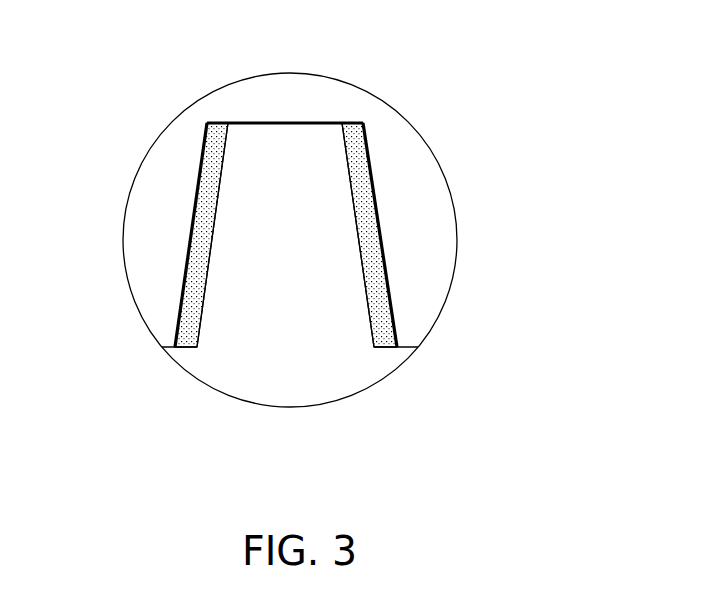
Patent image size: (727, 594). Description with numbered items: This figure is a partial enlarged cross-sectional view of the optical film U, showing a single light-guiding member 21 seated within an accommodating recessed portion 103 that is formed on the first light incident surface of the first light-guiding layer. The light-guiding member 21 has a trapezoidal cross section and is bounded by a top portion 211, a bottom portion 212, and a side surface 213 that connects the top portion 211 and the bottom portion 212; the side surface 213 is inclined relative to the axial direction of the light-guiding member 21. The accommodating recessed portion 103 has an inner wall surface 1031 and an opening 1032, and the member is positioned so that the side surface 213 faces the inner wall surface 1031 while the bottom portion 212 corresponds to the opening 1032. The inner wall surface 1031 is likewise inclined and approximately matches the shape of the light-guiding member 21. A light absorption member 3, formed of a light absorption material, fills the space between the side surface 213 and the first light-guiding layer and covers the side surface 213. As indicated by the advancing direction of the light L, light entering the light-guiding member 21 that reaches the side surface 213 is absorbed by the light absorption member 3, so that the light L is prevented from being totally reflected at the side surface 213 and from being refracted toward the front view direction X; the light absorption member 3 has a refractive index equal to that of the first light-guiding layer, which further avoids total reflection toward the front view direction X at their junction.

The optical film U is at (105, 38).
The light absorption member 3 is at (212, 162).
The light-guiding member 21 is at (304, 250).
The top portion 211 is at (277, 138).
The bottom portion 212 is at (325, 328).
The side surface 213 is at (357, 227).
The accommodating recessed portion 103 is at (322, 123).
The inner wall surface 1031 is at (187, 280).
The opening 1032 is at (396, 365).
The light L is at (190, 243).
The front view direction X is at (608, 147).